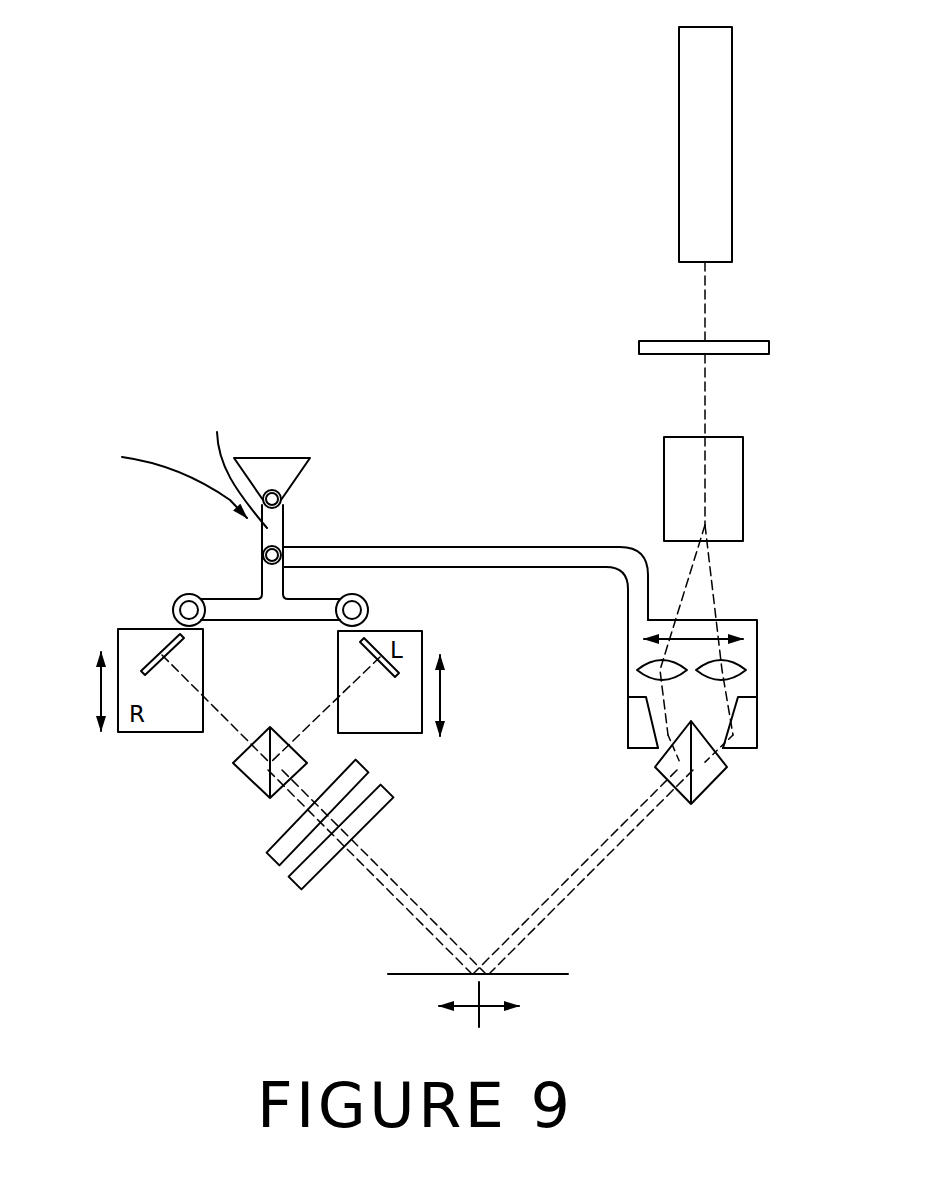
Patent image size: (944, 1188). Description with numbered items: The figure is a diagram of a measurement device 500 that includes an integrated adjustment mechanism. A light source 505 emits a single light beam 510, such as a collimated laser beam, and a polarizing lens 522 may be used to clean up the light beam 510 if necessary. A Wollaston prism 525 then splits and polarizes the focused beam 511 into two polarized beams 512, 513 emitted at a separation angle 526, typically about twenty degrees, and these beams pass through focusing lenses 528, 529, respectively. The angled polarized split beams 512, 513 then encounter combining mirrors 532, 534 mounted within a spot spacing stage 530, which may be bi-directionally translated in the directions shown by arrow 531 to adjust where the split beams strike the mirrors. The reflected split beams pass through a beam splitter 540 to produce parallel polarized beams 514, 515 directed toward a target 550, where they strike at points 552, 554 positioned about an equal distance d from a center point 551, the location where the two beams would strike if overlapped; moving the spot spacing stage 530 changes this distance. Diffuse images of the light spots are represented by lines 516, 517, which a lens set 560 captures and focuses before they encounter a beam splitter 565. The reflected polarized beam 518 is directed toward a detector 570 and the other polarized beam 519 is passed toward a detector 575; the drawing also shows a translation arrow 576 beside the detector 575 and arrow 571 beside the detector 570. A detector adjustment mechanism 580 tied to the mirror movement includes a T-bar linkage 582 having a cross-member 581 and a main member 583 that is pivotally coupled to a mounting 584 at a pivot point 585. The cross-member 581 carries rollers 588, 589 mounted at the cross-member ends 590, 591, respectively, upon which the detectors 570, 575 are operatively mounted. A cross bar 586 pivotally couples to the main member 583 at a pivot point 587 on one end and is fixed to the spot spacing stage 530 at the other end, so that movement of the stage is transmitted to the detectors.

The measurement device 500 is at (165, 943).
The light source 505 is at (732, 189).
The light beam 510 is at (705, 294).
The focused beam 511 is at (705, 388).
The polarized beam 512 is at (680, 573).
The polarized beam 513 is at (710, 563).
The parallel polarized beam 514 is at (580, 868).
The parallel polarized beam 515 is at (563, 900).
The diffuse beam 516 is at (413, 920).
The diffuse beam 517 is at (397, 887).
The reflected polarized beam 518 is at (313, 727).
The polarized beam 519 is at (223, 710).
The polarizing lens 522 is at (639, 347).
The Wollaston prism 525 is at (743, 500).
The separation angle 526 is at (703, 532).
The focusing lens 528 is at (637, 679).
The focusing lens 529 is at (745, 679).
The spot spacing stage 530 is at (757, 648).
The arrow 531 is at (694, 642).
The combining mirror 532 is at (650, 733).
The combining mirror 534 is at (728, 724).
The beam splitter 540 is at (710, 787).
The target 550 is at (553, 974).
The center point 551 is at (478, 974).
The point 552 is at (477, 974).
The point 554 is at (483, 974).
The lens set 560 is at (293, 880).
The beam splitter 565 is at (253, 783).
The detector 570 is at (397, 668).
The left mirror translation 571 is at (440, 700).
The detector 575 is at (147, 662).
The right mirror translation 576 is at (101, 695).
The detector adjustment mechanism 580 is at (158, 482).
The cross-member 581 is at (257, 612).
The T-bar linkage 582 is at (225, 598).
The main member 583 is at (217, 432).
The mounting 584 is at (302, 474).
The pivot point 585 is at (281, 499).
The cross bar 586 is at (440, 547).
The pivot point 587 is at (281, 555).
The roller 588 is at (363, 600).
The roller 589 is at (173, 608).
The cross-member end 590 is at (368, 610).
The cross-member end 591 is at (180, 596).